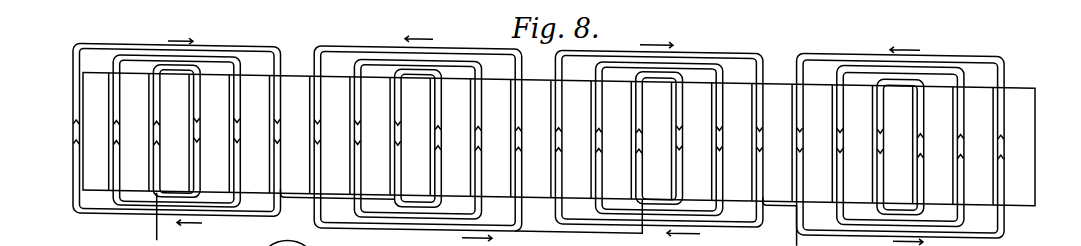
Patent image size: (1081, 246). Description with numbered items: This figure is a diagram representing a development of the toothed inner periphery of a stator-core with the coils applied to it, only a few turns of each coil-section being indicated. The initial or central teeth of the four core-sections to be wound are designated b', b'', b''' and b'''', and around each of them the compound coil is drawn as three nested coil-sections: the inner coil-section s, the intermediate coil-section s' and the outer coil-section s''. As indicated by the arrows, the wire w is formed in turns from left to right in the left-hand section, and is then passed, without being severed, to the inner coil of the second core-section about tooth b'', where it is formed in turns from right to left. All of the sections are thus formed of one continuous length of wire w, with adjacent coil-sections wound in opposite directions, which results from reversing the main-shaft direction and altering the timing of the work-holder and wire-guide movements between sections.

The inner coil-section s is at (174, 112).
The intermediate coil-section s' is at (174, 115).
The outer coil-section s'' is at (165, 129).
The initial or central tooth of the first core-section b' is at (165, 124).
The initial or central tooth of the second core-section b'' is at (418, 133).
The initial or central tooth of the third core-section b''' is at (659, 138).
The initial or central tooth of the fourth core-section b'''' is at (901, 145).
The wire w is at (157, 228).